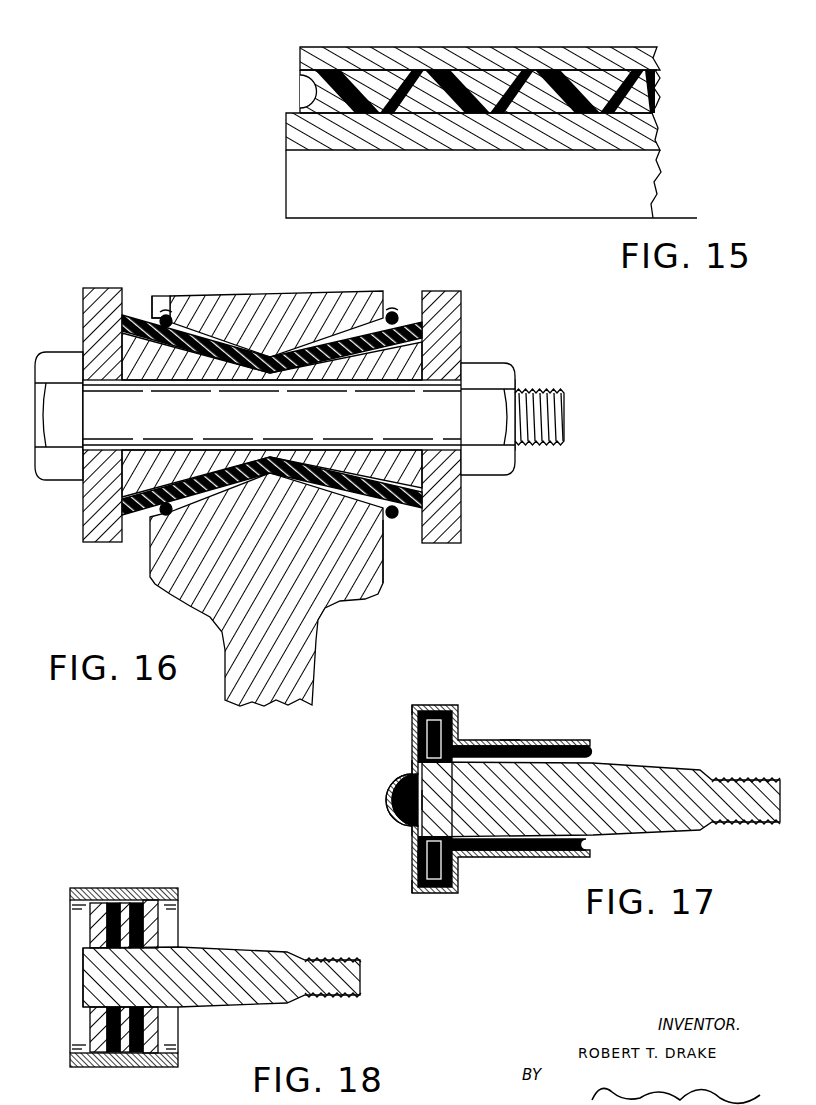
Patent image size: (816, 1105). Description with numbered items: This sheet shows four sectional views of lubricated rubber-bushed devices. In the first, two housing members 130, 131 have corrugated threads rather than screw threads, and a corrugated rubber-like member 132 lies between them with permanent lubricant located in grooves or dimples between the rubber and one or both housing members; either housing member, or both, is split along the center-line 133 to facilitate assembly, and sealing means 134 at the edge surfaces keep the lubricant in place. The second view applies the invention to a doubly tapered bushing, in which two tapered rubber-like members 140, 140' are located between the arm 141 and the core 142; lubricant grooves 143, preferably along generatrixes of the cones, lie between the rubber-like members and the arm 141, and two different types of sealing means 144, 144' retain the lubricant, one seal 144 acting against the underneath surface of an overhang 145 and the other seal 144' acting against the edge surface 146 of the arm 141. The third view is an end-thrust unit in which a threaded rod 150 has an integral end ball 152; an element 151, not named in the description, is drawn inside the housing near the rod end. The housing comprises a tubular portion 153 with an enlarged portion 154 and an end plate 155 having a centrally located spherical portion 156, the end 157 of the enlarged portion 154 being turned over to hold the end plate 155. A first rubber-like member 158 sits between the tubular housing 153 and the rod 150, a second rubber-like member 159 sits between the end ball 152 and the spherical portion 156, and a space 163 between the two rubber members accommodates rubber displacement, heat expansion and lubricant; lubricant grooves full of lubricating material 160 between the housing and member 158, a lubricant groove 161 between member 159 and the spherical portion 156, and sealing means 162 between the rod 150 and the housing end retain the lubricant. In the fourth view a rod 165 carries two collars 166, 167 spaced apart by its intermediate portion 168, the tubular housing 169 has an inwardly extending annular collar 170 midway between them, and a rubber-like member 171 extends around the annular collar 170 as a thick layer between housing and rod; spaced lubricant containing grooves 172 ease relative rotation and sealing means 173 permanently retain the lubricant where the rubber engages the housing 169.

In FIG. 15, the housing member 130 is at (605, 47).
In FIG. 15, the housing member 131 is at (648, 128).
In FIG. 15, the corrugated rubber-like member 132 is at (655, 80).
In FIG. 15, the center-line 133 is at (662, 217).
In FIG. 15, the sealing means 134 is at (300, 77).
In FIG. 16, the tapered rubber-like member 140 is at (272, 390).
In FIG. 16, the tapered rubber-like member 140' is at (413, 382).
In FIG. 16, the arm 141 is at (318, 300).
In FIG. 16, the core 142 is at (410, 360).
In FIG. 16, the lubricant grooves 143 is at (266, 300).
In FIG. 16, the sealing means 144 is at (156, 285).
In FIG. 16, the sealing means 144' is at (413, 289).
In FIG. 16, the overhang 145 is at (158, 300).
In FIG. 16, the edge surface 146 is at (388, 555).
In FIG. 17, the threaded rod 150 is at (665, 775).
In FIG. 17, the inner bushing 151 is at (432, 740).
In FIG. 17, the end ball 152 is at (420, 795).
In FIG. 17, the tubular portion 153 is at (556, 745).
In FIG. 17, the enlarged portion 154 is at (440, 706).
In FIG. 17, the end plate 155 is at (412, 876).
In FIG. 17, the spherical portion 156 is at (394, 804).
In FIG. 17, the end 157 is at (412, 710).
In FIG. 17, the first rubber-like member 158 is at (500, 750).
In FIG. 17, the second rubber-like member 159 is at (416, 762).
In FIG. 17, the lubricant grooves 160 is at (456, 740).
In FIG. 17, the lubricant groove 161 is at (408, 824).
In FIG. 17, the sealing means 162 is at (585, 746).
In FIG. 17, the space 163 is at (418, 848).
In FIG. 18, the rod 165 is at (236, 950).
In FIG. 18, the collar 166 is at (95, 936).
In FIG. 18, the collar 167 is at (150, 937).
In FIG. 18, the intermediate portion 168 is at (221, 977).
In FIG. 18, the tubular housing 169 is at (168, 892).
In FIG. 18, the annular collar 170 is at (114, 912).
In FIG. 18, the rubber-like member 171 is at (100, 905).
In FIG. 18, the lubricant containing grooves 172 is at (142, 905).
In FIG. 18, the sealing means 173 is at (72, 905).